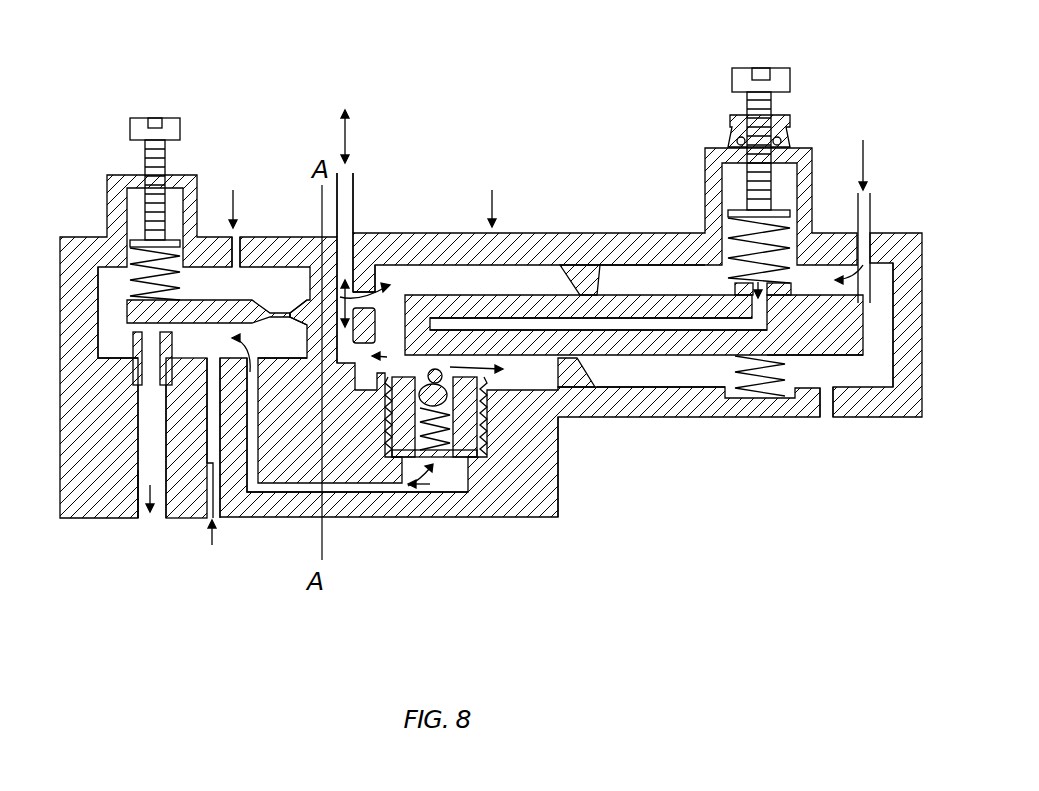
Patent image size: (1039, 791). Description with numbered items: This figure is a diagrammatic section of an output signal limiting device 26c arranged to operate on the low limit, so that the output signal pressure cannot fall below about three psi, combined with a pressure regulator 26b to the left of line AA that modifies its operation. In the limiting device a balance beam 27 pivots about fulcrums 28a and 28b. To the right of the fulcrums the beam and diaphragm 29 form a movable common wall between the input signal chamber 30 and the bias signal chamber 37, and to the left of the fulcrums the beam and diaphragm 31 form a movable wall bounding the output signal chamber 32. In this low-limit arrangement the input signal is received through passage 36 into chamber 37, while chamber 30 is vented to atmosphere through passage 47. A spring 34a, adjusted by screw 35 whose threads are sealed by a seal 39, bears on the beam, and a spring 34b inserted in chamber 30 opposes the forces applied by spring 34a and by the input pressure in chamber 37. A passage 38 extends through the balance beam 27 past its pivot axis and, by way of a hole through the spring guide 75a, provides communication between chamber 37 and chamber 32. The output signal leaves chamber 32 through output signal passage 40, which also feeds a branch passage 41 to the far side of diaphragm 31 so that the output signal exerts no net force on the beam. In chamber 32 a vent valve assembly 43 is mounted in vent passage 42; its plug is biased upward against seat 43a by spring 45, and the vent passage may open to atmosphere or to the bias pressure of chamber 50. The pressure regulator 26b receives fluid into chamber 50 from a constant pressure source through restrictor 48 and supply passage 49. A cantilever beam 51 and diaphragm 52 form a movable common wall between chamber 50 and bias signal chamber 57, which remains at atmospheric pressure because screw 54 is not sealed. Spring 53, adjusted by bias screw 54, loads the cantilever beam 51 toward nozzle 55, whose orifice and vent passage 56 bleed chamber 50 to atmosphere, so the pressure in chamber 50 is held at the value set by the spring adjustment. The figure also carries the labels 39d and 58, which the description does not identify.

The pressure regulator 26b is at (256, 220).
The output signal limiting device 26c is at (497, 194).
The balance beam 27 is at (638, 357).
The fulcrum 28a is at (600, 367).
The fulcrum 28b is at (598, 275).
The diaphragm 29 is at (873, 318).
The input signal chamber 30 is at (678, 370).
The diaphragm 31 is at (392, 318).
The output signal chamber 32 is at (563, 417).
The spring 34a is at (790, 232).
The spring 34b is at (763, 398).
The screw 35 is at (773, 102).
The bias signal passage 36 is at (872, 228).
The bias signal chamber 37 is at (657, 283).
The passage 38 is at (707, 322).
The seal 39 is at (728, 133).
The spring seat 39d is at (807, 356).
The output signal passage 40 is at (347, 200).
The branch passage 41 is at (362, 290).
The vent passage 42 is at (450, 383).
The vent valve assembly 43 is at (473, 387).
The seat 43a is at (395, 405).
The spring 45 is at (435, 453).
The passage 47 is at (823, 413).
The restrictor 48 is at (208, 468).
The supply passage 49 is at (185, 470).
The chamber 50 is at (263, 349).
The cantilever beam 51 is at (287, 280).
The diaphragm 52 is at (110, 292).
The spring 53 is at (133, 262).
The screw 54 is at (165, 158).
The nozzle 55 is at (133, 360).
The vent passage 56 is at (150, 435).
The bias signal chamber 57 is at (225, 297).
The vent slot 58 is at (235, 189).
The spring guide 75a is at (735, 290).